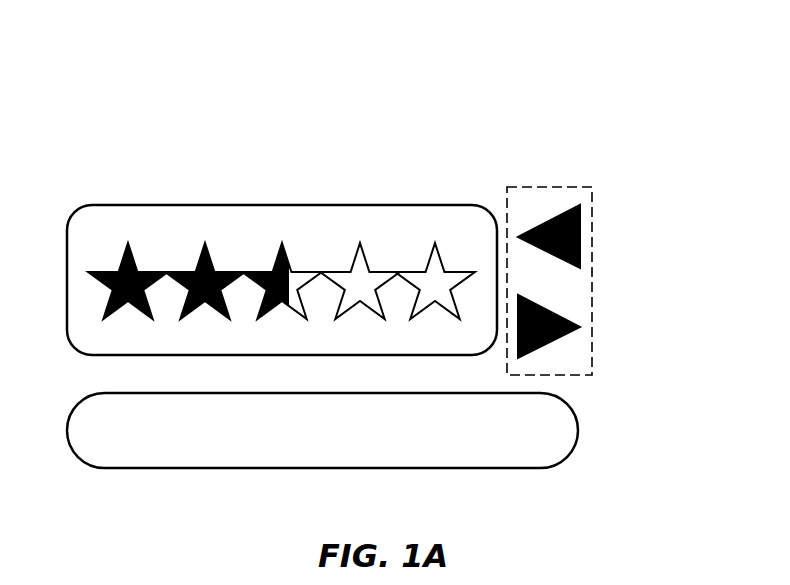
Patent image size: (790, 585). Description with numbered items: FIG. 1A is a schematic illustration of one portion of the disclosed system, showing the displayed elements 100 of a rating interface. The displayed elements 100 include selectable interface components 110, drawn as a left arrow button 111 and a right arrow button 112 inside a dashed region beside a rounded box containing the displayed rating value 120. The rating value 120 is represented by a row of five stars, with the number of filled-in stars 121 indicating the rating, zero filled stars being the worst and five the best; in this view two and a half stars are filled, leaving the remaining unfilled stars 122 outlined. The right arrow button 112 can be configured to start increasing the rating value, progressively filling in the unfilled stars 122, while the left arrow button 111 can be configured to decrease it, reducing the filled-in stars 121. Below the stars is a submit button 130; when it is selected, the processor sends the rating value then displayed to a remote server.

The displayed elements 100 is at (291, 96).
The selectable interface components 110 is at (550, 187).
The left arrow button 111 is at (580, 237).
The right arrow button 112 is at (580, 327).
The displayed rating value 120 is at (140, 205).
The filled-in stars 121 is at (205, 243).
The unfilled stars 122 is at (360, 243).
The submit button 130 is at (320, 468).